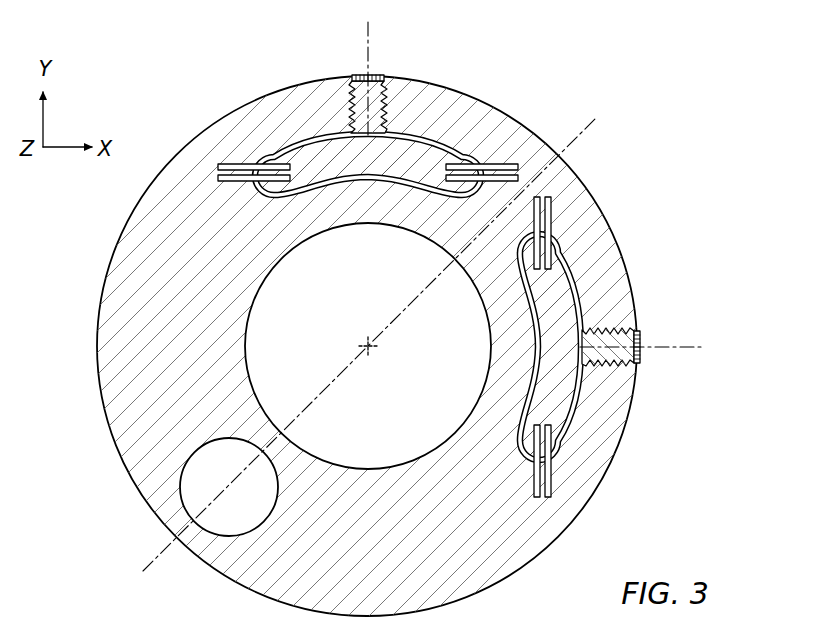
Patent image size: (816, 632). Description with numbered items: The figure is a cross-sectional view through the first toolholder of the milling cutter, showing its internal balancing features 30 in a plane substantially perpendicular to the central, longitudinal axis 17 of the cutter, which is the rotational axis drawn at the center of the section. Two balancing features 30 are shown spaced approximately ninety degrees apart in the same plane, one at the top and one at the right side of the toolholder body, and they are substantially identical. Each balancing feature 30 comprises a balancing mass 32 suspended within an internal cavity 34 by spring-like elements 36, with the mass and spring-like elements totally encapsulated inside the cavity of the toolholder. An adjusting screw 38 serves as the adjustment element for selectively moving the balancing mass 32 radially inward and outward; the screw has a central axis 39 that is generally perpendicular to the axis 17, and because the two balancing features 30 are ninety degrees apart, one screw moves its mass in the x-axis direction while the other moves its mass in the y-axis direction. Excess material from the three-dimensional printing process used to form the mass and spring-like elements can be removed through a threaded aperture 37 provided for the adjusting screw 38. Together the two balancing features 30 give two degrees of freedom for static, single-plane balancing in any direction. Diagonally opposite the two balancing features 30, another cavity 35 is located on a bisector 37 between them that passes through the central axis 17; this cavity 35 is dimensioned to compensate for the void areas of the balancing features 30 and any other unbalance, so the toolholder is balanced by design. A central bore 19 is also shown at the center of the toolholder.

The central longitudinal axis 17 is at (366, 343).
The central bore 19 is at (246, 320).
The internal balancing feature 30 is at (290, 82).
The balancing mass 32 is at (409, 153).
The internal cavity 34 is at (285, 152).
The cavity 35 is at (182, 481).
The spring-like elements 36 is at (238, 162).
The threaded aperture 37 is at (350, 94).
The adjusting screw 38 is at (391, 97).
The central axis 39 is at (367, 53).